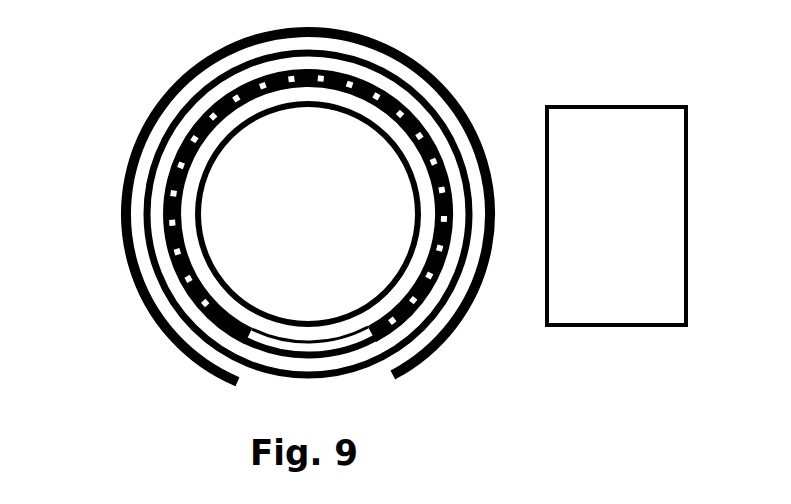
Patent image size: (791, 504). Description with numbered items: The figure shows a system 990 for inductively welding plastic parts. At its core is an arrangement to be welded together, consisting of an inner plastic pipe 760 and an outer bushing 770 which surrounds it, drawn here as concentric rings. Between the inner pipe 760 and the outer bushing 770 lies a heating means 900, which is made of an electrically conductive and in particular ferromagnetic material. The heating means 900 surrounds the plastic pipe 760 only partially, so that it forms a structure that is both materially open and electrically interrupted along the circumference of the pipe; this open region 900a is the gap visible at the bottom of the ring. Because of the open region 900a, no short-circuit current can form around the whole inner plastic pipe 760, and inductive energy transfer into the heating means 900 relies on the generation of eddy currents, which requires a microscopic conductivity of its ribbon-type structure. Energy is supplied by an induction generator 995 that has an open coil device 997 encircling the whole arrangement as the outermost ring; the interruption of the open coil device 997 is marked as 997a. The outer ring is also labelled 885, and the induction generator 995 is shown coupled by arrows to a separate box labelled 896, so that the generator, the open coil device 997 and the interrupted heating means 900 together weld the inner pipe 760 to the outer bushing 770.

The outer ring 885 is at (152, 108).
The open coil device 997 is at (137, 283).
The interruption of the open coil device 997a is at (372, 398).
The outer bushing 770 is at (163, 162).
The heating means 900 is at (372, 102).
The open region 900a is at (300, 343).
The inner plastic pipe 760 is at (432, 207).
The system 990 is at (582, 85).
The external unit 896 is at (636, 228).
The induction generator 995 is at (566, 360).